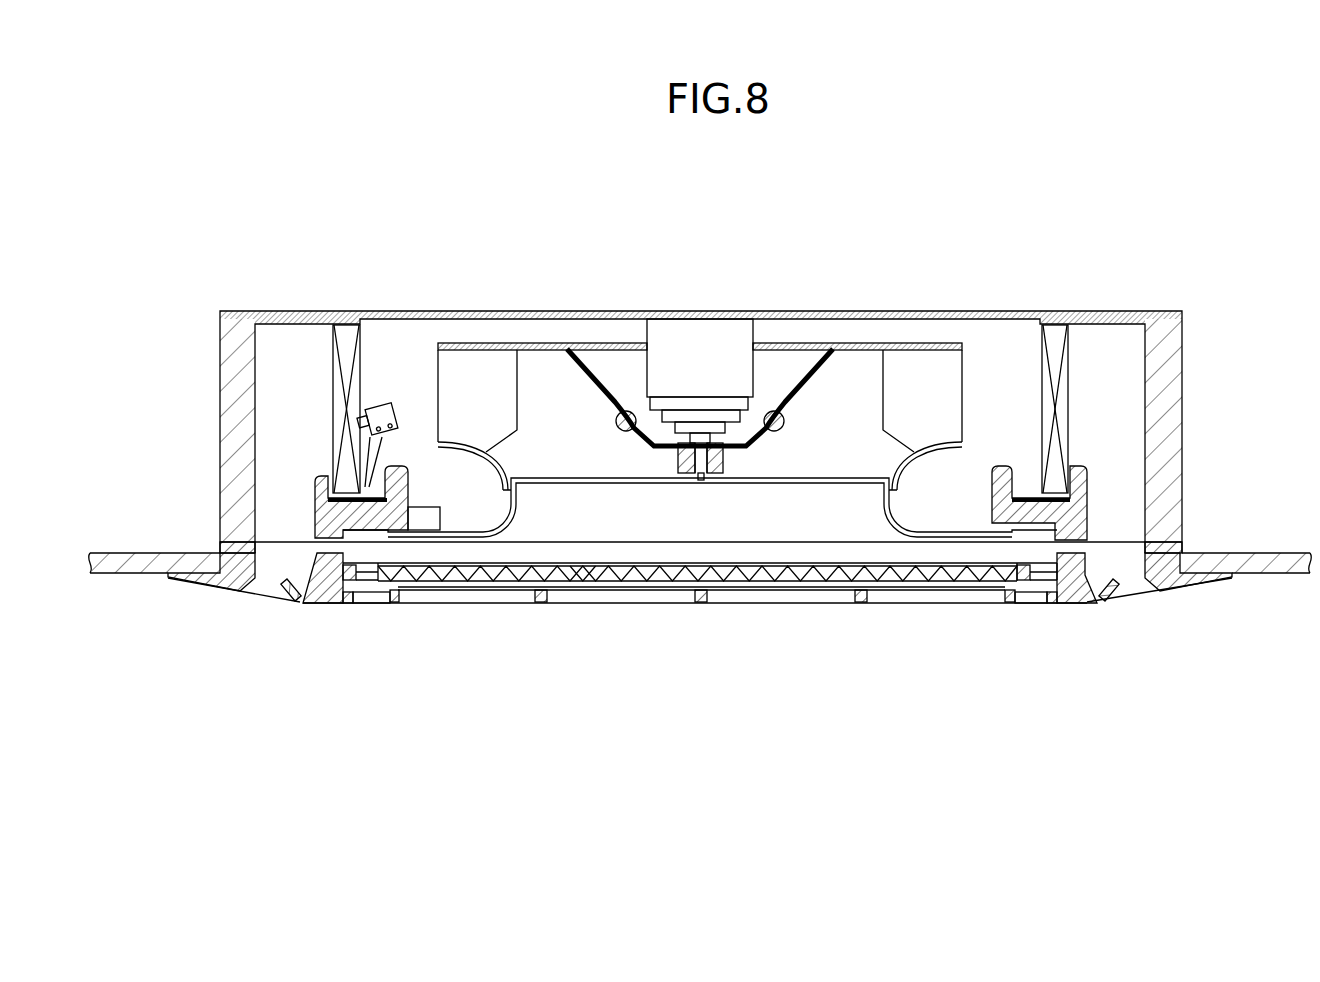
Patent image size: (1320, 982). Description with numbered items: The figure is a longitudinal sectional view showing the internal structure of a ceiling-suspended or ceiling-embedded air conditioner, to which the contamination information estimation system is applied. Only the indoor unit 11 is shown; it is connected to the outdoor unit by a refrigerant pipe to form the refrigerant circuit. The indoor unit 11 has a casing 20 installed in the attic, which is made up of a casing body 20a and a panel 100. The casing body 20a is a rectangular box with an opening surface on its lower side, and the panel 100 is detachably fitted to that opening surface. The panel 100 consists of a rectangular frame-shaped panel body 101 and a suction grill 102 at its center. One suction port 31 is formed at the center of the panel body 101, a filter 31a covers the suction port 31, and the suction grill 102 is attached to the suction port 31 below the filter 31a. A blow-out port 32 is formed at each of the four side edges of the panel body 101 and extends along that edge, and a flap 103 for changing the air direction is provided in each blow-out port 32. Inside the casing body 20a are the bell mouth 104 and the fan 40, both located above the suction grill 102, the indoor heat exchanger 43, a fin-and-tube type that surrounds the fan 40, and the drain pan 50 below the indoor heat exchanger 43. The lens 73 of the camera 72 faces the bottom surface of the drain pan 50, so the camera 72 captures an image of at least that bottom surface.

The indoor unit 11 is at (1153, 292).
The casing 20 is at (348, 310).
The casing body 20a is at (220, 436).
The suction port 31 is at (491, 557).
The filter 31a is at (588, 577).
The blow-out port 32 is at (248, 598).
The fan 40 is at (797, 340).
The indoor heat exchanger 43 is at (333, 346).
The drain pan 50 is at (318, 474).
The camera 72 is at (388, 404).
The lens 73 is at (381, 436).
The panel 100 is at (338, 608).
The panel body 101 is at (1062, 604).
The suction grill 102 is at (384, 604).
The flap 103 is at (298, 604).
The bell mouth 104 is at (560, 478).